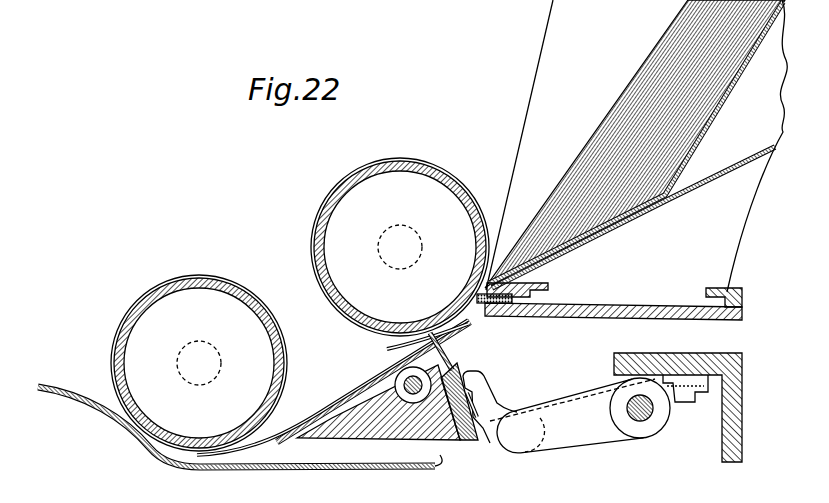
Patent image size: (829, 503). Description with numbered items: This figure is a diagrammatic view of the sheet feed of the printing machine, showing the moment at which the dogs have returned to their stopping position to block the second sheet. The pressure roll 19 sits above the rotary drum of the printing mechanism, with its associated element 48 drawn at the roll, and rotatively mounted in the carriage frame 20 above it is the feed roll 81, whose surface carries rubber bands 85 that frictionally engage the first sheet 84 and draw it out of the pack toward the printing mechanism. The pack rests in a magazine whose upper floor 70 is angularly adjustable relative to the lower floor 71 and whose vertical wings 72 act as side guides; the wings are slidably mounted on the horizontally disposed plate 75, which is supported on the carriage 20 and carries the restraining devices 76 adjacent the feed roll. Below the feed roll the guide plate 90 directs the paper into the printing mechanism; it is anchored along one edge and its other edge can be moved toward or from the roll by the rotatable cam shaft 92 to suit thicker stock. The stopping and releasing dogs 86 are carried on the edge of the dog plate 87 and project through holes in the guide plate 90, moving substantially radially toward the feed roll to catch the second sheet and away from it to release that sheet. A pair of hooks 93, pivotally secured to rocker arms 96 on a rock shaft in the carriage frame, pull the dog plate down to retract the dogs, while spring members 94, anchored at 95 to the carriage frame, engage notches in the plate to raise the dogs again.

The pressure roll 19 is at (155, 300).
The roller 48 is at (195, 278).
The rubber bands 85 is at (341, 182).
The feed roll 81 is at (399, 158).
The first sheet 84 is at (565, 178).
The upper floor 70 is at (726, 112).
The strip 71 is at (649, 216).
The vertical wings 72 is at (528, 98).
The plate 75 is at (574, 306).
The pad 76 is at (485, 306).
The guide plate 90 is at (365, 392).
The stopping and releasing dogs 86 is at (400, 346).
The carriage frame 20 is at (380, 424).
The cam shaft 92 is at (415, 392).
The dog plate 87 is at (449, 366).
The hooks 93 is at (497, 403).
The spring members 94 is at (547, 405).
The anchor 95 is at (707, 392).
The rocker arms 96 is at (592, 437).